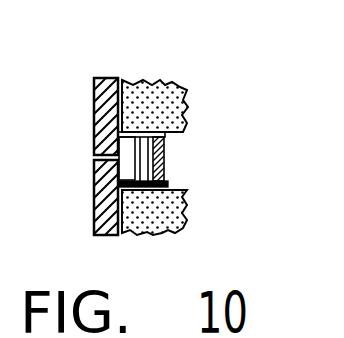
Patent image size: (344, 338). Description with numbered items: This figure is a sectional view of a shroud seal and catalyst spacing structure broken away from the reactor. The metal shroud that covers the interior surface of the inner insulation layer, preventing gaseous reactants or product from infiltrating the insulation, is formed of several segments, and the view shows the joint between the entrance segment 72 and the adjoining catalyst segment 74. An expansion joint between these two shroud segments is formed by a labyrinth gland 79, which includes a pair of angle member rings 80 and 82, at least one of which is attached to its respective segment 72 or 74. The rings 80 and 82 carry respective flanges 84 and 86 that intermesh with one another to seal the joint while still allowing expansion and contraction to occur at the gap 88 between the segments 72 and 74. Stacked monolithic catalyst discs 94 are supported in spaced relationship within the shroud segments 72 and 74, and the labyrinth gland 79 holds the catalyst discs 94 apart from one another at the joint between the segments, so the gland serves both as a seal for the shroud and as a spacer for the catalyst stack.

The entrance segment 72 is at (94, 102).
The catalyst segment 74 is at (95, 200).
The labyrinth gland 79 is at (262, 188).
The angle member ring 80 is at (165, 134).
The angle member ring 82 is at (168, 186).
The flange 84 is at (165, 152).
The flange 86 is at (165, 169).
The gap 88 is at (93, 162).
The monolithic catalyst disc 94 is at (167, 80).